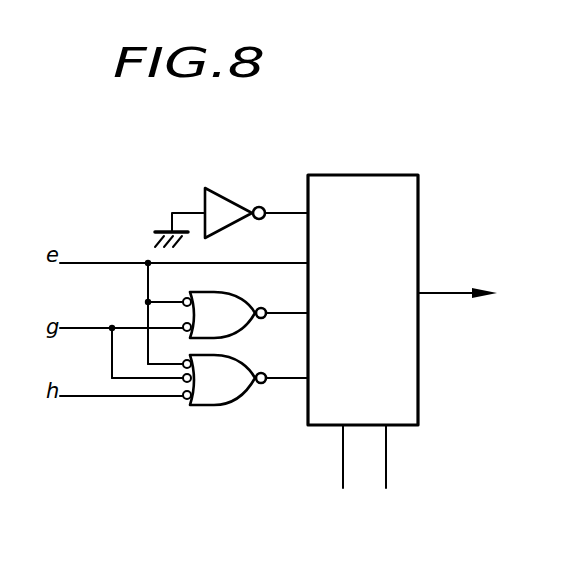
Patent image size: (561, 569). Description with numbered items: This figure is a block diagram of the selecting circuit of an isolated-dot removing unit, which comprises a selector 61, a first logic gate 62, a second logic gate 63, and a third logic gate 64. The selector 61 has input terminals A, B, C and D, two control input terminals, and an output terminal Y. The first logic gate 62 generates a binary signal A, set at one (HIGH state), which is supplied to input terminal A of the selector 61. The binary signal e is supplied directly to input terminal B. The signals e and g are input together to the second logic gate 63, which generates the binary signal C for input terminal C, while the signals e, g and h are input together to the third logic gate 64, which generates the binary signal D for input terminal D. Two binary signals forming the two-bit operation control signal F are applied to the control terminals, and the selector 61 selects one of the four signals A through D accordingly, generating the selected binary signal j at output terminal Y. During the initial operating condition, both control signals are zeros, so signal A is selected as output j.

The selector 61 is at (420, 228).
The first logic gate 62 is at (236, 195).
The second logic gate 63 is at (234, 292).
The third logic gate 64 is at (237, 404).